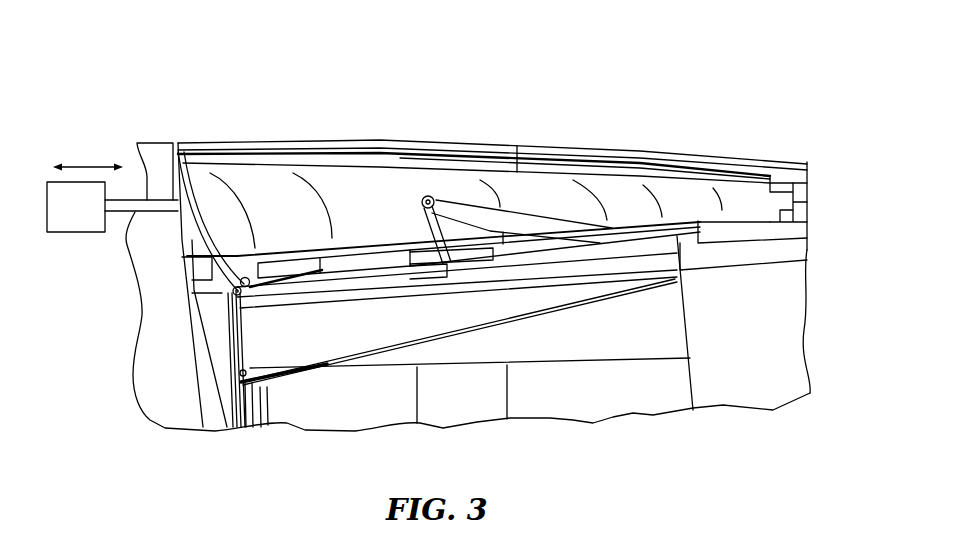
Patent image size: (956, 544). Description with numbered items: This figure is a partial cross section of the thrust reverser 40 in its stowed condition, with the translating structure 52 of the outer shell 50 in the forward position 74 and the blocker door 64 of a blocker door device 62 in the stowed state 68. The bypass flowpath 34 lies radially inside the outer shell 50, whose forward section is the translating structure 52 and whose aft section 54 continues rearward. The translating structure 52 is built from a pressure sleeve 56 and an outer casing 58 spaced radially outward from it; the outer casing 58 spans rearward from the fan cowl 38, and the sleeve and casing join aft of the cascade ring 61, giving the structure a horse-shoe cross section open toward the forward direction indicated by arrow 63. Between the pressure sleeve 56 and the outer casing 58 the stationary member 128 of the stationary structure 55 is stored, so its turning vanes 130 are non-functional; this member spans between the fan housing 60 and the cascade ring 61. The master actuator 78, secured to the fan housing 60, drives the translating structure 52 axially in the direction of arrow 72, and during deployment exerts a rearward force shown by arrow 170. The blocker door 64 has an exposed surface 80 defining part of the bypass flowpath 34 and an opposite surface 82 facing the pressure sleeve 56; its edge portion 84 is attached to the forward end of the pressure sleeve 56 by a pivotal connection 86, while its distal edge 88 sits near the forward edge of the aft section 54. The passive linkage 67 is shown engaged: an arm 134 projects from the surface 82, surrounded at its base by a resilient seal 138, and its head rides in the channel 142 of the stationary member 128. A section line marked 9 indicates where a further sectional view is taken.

The thrust reverser 40 is at (586, 69).
The outer casing 58 is at (386, 141).
The stationary member 128 is at (278, 152).
The translating structure 52 is at (635, 155).
The turning vane 130 is at (598, 196).
The passive linkage 67 is at (467, 180).
The cascade ring 61 is at (783, 218).
The outer shell 50 is at (817, 199).
The aft section 54 is at (773, 259).
The distal edge 88 is at (680, 268).
The opposite surface 82 is at (613, 246).
The stowed state 68 is at (610, 320).
The arrow 63 is at (780, 377).
The stationary structure 55 is at (172, 440).
The fan cowl 38 is at (155, 143).
The arrow 72 is at (83, 160).
The master actuator 78 is at (90, 219).
The arrow 170 is at (153, 225).
The forward position 74 is at (213, 114).
The section line 9- 9 is at (454, 116).
The arm 134 is at (425, 205).
The channel 142 is at (495, 216).
The pressure sleeve 56 is at (343, 263).
The resilient seal 138 is at (447, 283).
The pivotal connection 86 is at (235, 309).
The edge portion 84 is at (240, 342).
The fan housing 60 is at (220, 432).
The blocker door device 62 is at (378, 380).
The bypass flowpath 34 is at (544, 402).
The exposed surface 80 is at (550, 316).
The blocker door 64 is at (584, 318).